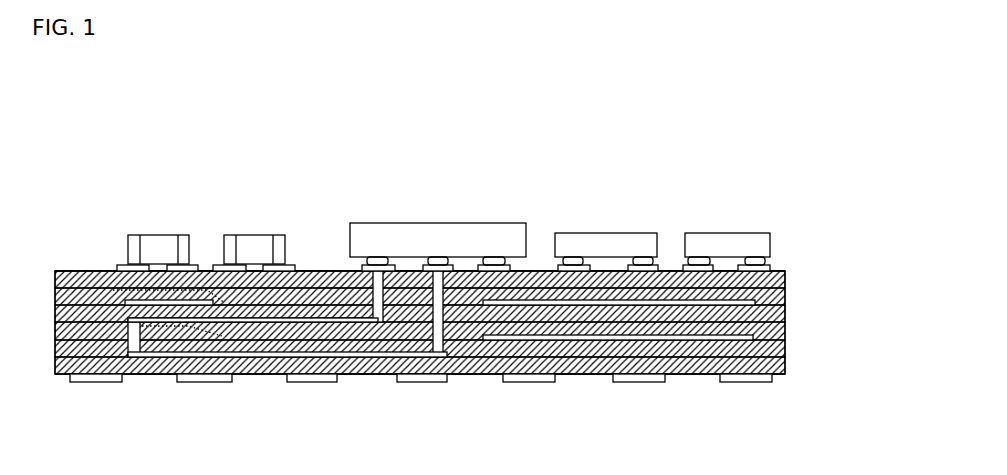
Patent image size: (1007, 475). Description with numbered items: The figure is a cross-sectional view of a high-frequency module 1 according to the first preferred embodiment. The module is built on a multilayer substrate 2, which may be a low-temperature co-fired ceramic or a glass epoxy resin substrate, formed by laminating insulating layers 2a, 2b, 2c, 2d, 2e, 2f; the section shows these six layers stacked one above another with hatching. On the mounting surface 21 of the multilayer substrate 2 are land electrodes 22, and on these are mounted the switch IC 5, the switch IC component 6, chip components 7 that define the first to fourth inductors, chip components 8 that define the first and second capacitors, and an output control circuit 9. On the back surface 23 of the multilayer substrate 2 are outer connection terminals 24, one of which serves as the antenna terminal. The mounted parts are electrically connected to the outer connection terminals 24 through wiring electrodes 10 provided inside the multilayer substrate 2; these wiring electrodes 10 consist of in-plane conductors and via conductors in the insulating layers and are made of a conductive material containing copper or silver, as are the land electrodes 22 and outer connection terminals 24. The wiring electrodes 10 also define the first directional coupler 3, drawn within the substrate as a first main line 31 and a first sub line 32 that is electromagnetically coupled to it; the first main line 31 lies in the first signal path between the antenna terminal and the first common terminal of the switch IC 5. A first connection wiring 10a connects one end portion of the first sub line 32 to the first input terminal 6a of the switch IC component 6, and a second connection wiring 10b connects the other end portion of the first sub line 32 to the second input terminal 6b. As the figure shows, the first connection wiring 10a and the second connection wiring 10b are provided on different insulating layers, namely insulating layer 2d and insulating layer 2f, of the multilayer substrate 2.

The high-frequency module 1 is at (652, 165).
The multilayer substrate 2 is at (458, 325).
The insulating layer 2a is at (785, 276).
The insulating layer 2b is at (778, 295).
The insulating layer 2c is at (778, 312).
The insulating layer 2d is at (778, 329).
The insulating layer 2e is at (778, 347).
The insulating layer 2f is at (437, 368).
The first directional coupler 3 is at (218, 270).
The first main line 31 is at (128, 302).
The first sub line 32 is at (187, 318).
The switch IC 5 is at (615, 240).
The switch IC component 6 is at (417, 228).
The first input terminal 6a is at (378, 262).
The second input terminal 6b is at (440, 262).
The chip component 7 is at (251, 242).
The chip component 8 is at (160, 243).
The output control circuit 9 is at (756, 236).
The wiring electrode 10 is at (137, 352).
The first connection wiring 10a is at (323, 320).
The second connection wiring 10b is at (273, 355).
The mounting surface 21 is at (93, 271).
The land electrode 22 is at (183, 266).
The back surface 23 is at (65, 376).
The outer connection terminal 24 is at (90, 382).